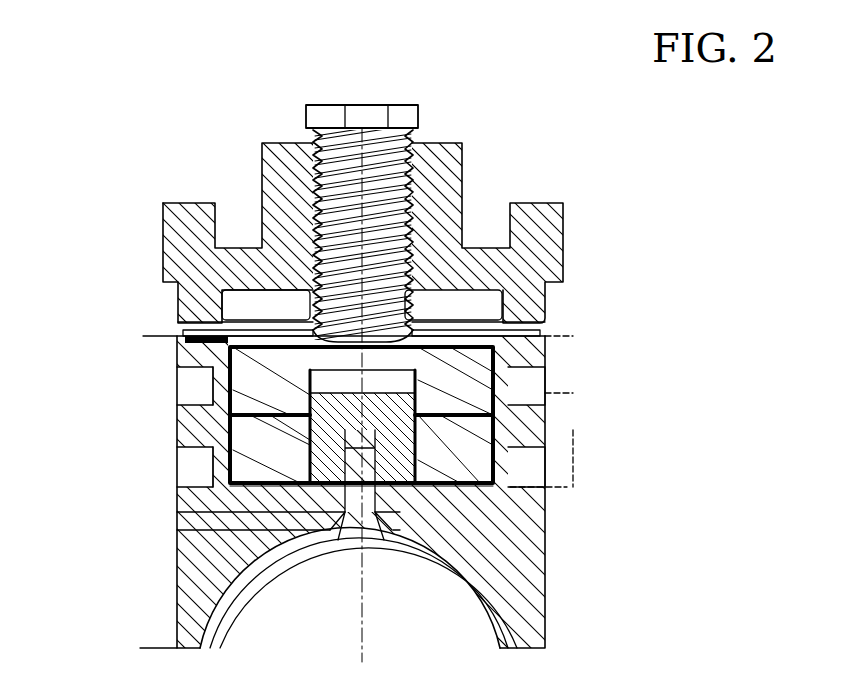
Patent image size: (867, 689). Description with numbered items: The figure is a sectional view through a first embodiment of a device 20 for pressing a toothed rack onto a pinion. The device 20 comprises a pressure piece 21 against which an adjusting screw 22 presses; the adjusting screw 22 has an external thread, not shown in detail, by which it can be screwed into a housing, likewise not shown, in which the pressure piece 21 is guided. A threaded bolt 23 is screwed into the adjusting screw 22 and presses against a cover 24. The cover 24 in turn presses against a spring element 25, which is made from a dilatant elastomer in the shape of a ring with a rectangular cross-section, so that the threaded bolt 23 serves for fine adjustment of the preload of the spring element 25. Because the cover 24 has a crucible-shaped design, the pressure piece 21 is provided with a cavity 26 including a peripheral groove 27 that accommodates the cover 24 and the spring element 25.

The device 20 is at (627, 282).
The pressure piece 21 is at (520, 542).
The adjusting screw 22 is at (183, 250).
The threaded bolt 23 is at (383, 153).
The cover 24 is at (230, 398).
The spring element 25 is at (470, 440).
The cavity 26 is at (510, 367).
The peripheral groove 27 is at (233, 490).